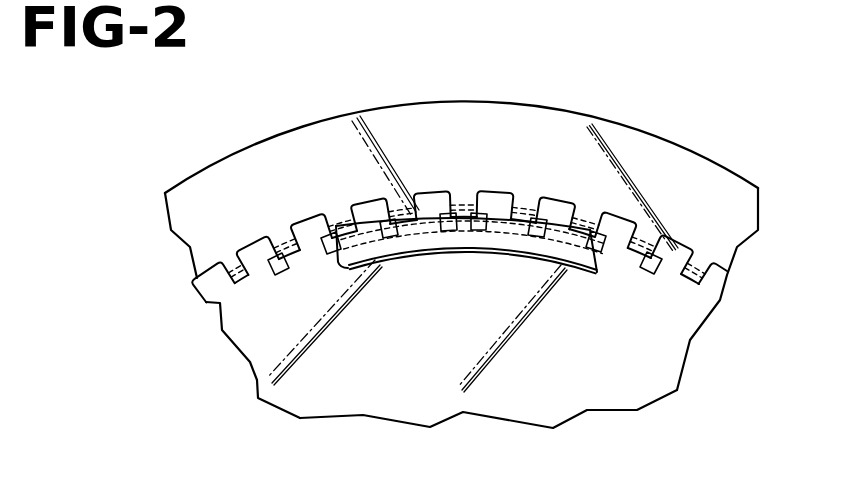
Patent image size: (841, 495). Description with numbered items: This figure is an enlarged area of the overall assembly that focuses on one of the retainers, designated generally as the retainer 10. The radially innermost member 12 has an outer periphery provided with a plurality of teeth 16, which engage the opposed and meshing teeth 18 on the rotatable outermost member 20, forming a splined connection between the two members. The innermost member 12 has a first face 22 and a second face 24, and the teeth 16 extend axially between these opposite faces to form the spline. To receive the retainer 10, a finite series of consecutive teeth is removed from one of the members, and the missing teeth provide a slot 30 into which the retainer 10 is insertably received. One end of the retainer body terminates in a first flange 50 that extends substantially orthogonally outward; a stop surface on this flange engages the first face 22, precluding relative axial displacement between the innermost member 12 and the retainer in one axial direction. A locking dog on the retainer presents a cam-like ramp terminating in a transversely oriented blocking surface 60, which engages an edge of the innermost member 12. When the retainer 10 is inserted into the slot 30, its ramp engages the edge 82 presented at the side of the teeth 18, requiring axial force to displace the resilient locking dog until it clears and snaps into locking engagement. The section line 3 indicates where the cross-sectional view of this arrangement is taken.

The section line 3- 3 is at (505, 456).
The retainer 10 is at (411, 297).
The radially innermost member 12 is at (600, 408).
The teeth 16 is at (275, 316).
The meshing teeth 18 is at (242, 282).
The rotatable outermost member 20 is at (201, 183).
The first face 22 is at (660, 356).
The second face 24 is at (250, 383).
The slot 30 is at (600, 253).
The first flange 50 is at (550, 253).
The blocking surface 60 is at (490, 230).
The edge 82 is at (463, 217).